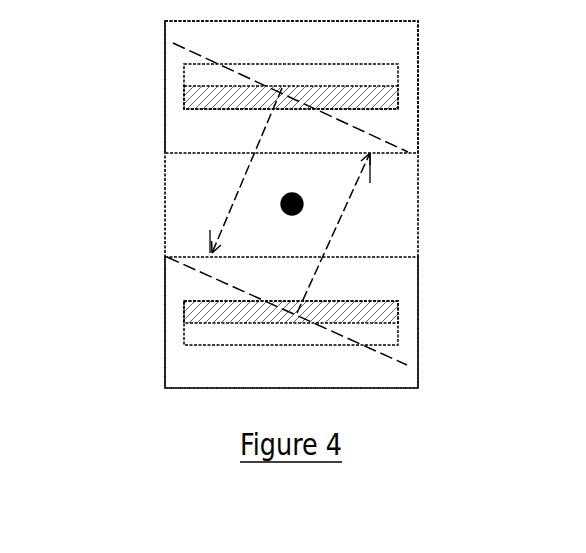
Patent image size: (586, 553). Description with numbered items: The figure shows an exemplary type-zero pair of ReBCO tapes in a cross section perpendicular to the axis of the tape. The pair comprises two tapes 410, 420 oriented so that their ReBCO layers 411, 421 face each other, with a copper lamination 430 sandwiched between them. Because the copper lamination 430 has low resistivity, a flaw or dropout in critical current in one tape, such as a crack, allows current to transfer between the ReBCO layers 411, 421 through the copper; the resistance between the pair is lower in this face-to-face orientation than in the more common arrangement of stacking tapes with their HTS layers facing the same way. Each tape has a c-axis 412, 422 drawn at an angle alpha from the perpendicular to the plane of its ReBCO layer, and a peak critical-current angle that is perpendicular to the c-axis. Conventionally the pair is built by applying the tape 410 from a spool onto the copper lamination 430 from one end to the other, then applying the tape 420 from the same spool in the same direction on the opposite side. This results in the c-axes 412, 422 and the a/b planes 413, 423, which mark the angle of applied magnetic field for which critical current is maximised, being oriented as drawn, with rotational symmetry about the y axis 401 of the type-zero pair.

The y axis 401 is at (303, 208).
The tape 410 is at (165, 361).
The ReBCO layer 411 is at (186, 312).
The c-axis 412 is at (313, 273).
The a/b plane 413 is at (402, 362).
The tape 420 is at (165, 62).
The ReBCO layer 421 is at (187, 98).
The c-axis 422 is at (245, 180).
The a/b plane 423 is at (383, 143).
The copper lamination 430 is at (165, 205).